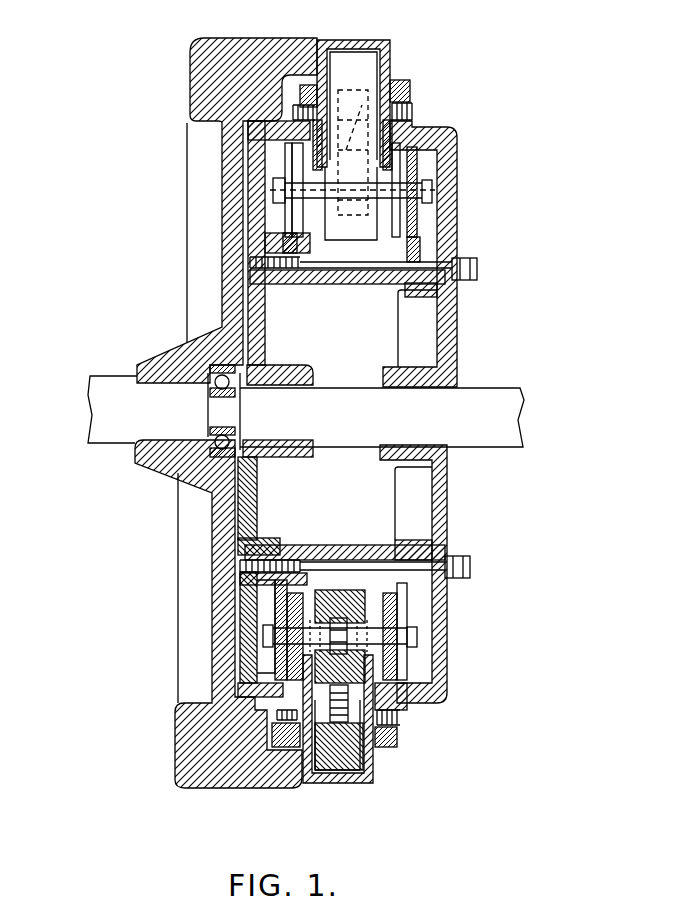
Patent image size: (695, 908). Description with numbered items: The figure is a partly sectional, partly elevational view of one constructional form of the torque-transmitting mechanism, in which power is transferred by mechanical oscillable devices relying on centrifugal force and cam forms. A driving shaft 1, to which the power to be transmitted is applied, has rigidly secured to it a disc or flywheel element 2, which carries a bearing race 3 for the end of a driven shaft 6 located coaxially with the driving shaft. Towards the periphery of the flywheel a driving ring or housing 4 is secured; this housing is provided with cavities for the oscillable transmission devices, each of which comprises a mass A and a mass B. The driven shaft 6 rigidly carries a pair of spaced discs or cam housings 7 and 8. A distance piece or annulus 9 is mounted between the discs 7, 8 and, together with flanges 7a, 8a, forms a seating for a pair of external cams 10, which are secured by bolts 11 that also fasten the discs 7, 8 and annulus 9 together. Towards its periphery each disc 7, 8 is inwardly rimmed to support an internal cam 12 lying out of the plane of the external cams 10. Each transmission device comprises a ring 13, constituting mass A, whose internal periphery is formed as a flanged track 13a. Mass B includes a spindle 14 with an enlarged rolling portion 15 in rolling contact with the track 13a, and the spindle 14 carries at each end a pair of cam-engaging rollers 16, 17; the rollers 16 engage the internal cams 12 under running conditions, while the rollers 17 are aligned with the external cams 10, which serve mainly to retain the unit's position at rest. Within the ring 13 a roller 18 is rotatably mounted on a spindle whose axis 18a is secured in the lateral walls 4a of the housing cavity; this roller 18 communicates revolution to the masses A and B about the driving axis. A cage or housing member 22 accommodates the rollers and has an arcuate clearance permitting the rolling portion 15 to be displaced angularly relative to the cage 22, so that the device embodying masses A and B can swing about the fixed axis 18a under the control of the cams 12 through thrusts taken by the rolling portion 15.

The driving shaft 1 is at (127, 380).
The disc or flywheel element 2 is at (192, 295).
The bearing race 3 is at (230, 448).
The driving ring or housing 4 is at (377, 50).
The lateral walls of the cavity 4a is at (338, 55).
The driven shaft 6 is at (497, 372).
The disc or cam housing 7 is at (448, 335).
The flange 7a is at (422, 287).
The disc or cam housing 8 is at (262, 333).
The flange 8a is at (272, 272).
The distance piece or annulus 9 is at (338, 282).
The external cam 10 is at (283, 245).
The bolt 11 is at (470, 272).
The internal cam 12 is at (412, 95).
The ring 13 is at (332, 772).
The flanged track 13a is at (318, 775).
The spindle 14 is at (400, 637).
The enlarged rolling portion 15 is at (355, 613).
The cam-engaging roller 16 is at (395, 678).
The cam-engaging roller 17 is at (405, 660).
The roller 18 is at (385, 72).
The axis of the roller spindle 18a is at (400, 120).
The cage or housing member 22 is at (392, 730).